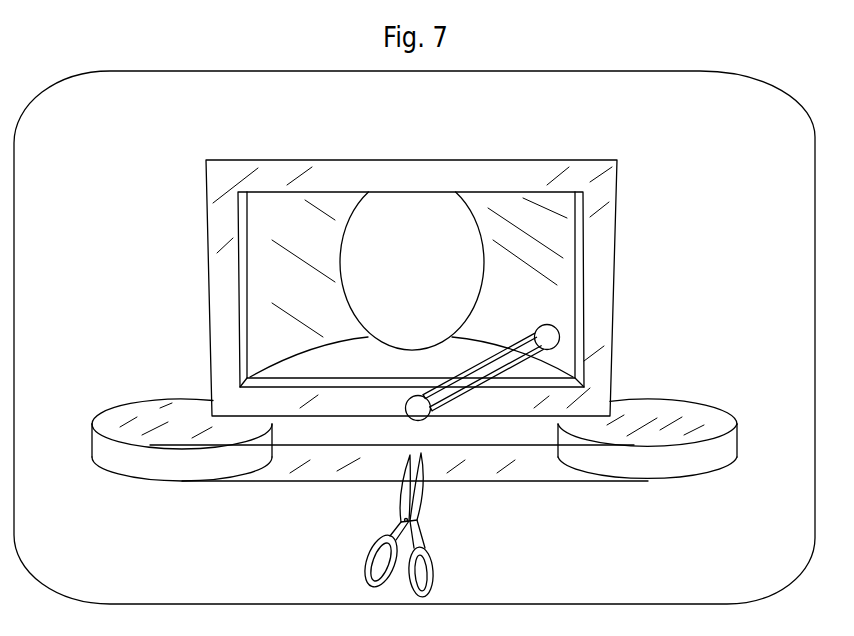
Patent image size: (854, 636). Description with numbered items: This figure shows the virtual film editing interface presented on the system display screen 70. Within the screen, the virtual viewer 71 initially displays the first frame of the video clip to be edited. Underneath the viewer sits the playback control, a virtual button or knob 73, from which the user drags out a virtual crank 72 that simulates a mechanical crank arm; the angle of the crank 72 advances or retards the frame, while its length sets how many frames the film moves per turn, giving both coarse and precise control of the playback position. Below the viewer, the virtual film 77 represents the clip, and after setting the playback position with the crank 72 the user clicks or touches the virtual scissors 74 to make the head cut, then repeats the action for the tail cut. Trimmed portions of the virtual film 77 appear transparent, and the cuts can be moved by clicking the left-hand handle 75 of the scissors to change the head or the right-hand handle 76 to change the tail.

The system display screen 70 is at (14, 489).
The virtual viewer 71 is at (600, 246).
The virtual crank 72 is at (542, 323).
The virtual button or knob 73 is at (406, 405).
The virtual scissors 74 is at (396, 503).
The left-hand handle 75 is at (364, 572).
The right-hand handle 76 is at (434, 567).
The virtual film 77 is at (726, 450).